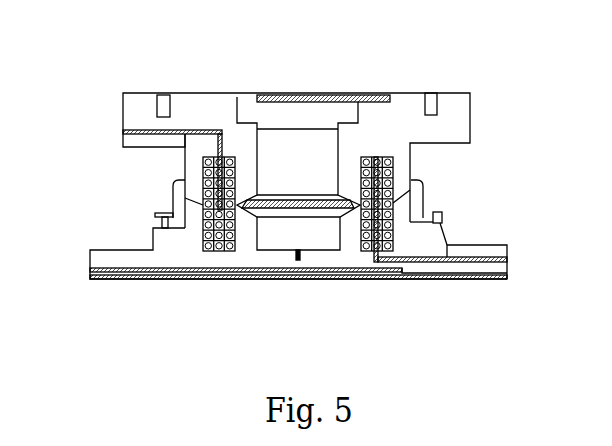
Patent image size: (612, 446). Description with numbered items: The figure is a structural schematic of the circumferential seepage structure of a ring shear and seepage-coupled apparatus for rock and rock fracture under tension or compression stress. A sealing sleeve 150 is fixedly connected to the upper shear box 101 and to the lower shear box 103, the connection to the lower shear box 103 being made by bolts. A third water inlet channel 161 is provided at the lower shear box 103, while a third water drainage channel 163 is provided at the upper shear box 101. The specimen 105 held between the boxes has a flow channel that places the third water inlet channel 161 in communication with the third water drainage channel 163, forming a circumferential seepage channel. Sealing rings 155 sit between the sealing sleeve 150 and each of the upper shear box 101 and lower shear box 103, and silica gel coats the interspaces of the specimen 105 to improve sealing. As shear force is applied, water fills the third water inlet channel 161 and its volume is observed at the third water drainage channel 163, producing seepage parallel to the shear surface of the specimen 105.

The upper shear box 101 is at (402, 113).
The lower shear box 103 is at (427, 250).
The specimen 105 is at (208, 250).
The sealing sleeve 150 is at (421, 198).
The sealing rings 155 is at (172, 212).
The third water inlet channel 161 is at (472, 263).
The third water drainage channel 163 is at (170, 130).